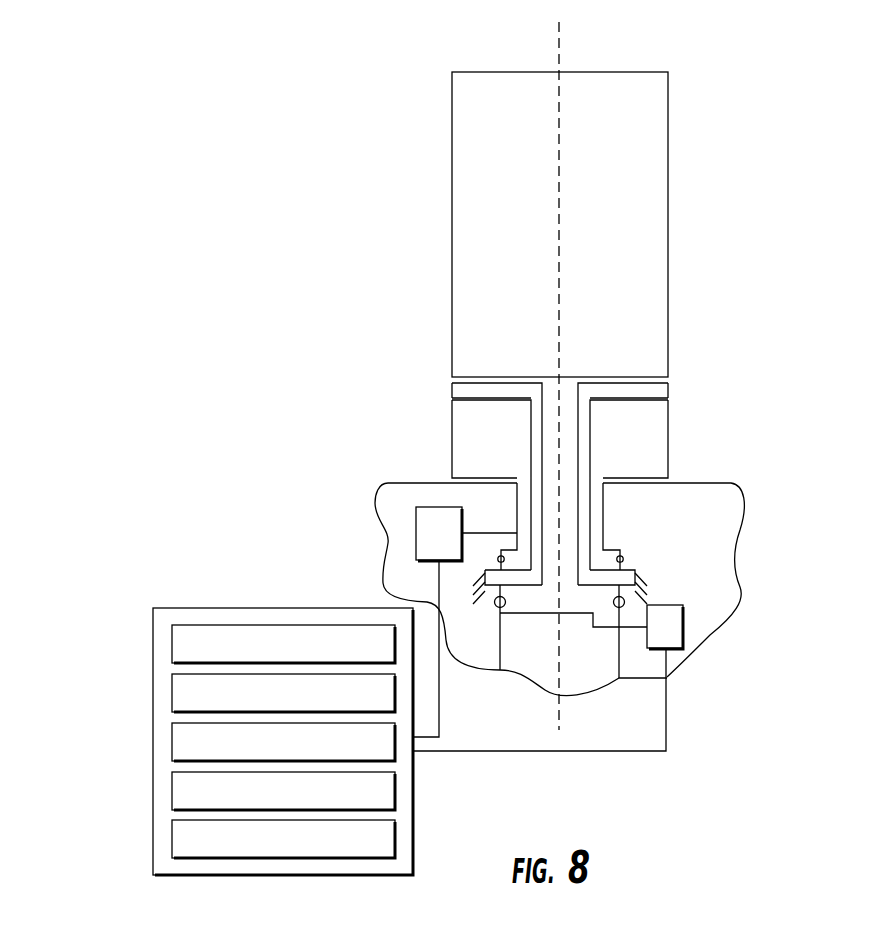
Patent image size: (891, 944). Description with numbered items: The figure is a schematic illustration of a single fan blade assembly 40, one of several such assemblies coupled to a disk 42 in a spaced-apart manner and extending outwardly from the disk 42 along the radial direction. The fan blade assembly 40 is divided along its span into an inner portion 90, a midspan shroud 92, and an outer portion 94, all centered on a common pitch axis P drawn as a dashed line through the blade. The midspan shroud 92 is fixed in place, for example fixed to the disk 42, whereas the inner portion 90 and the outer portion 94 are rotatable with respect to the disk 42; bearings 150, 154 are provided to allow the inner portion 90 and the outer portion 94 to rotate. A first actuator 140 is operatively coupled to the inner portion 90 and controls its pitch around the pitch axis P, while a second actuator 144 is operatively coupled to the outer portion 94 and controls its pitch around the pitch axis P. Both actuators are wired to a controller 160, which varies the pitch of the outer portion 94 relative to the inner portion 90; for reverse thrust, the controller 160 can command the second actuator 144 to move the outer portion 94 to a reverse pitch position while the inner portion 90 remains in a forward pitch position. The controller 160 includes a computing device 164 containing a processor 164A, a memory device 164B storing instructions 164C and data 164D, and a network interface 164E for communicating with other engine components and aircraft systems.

The fan blade assembly 40 is at (345, 114).
The pitch axis P is at (560, 58).
The outer portion 94 is at (668, 130).
The midspan shroud 92 is at (668, 392).
The inner portion 90 is at (668, 440).
The disk 42 is at (700, 485).
The bearing 150 is at (622, 560).
The bearing 154 is at (495, 603).
The first actuator 140 is at (416, 530).
The second actuator 144 is at (678, 650).
The controller 160 is at (224, 582).
The computing device 164 is at (413, 770).
The processor 164A is at (172, 648).
The memory device 164B is at (172, 697).
The instructions 164C is at (172, 746).
The data 164D is at (172, 795).
The network interface 164E is at (172, 844).